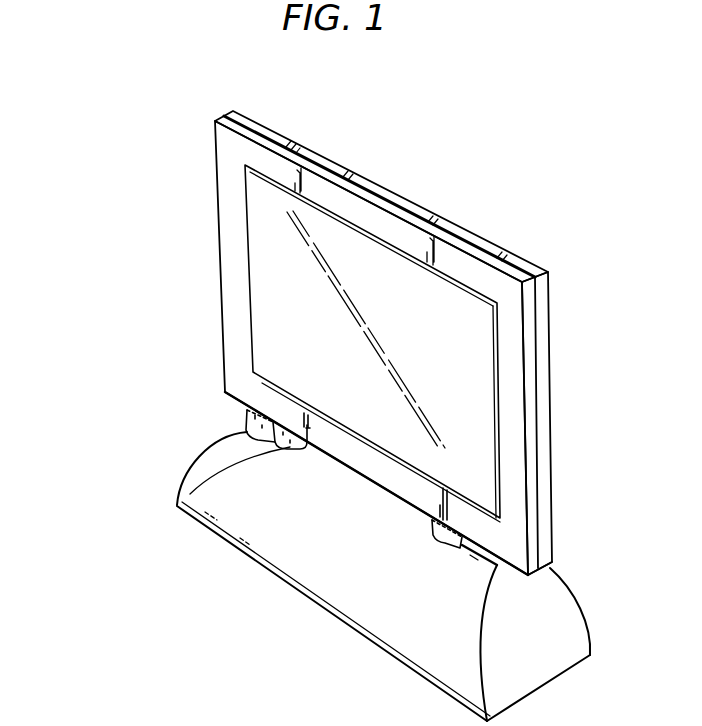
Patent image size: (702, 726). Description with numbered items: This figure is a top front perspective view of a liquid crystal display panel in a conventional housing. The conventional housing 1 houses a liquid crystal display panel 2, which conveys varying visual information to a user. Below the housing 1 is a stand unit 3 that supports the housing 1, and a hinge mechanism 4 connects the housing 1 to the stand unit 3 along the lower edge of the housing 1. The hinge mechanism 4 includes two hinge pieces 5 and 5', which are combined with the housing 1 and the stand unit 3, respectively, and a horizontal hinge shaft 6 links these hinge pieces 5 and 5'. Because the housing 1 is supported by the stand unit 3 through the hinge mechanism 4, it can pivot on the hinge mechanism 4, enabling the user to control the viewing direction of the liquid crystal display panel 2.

The housing 1 is at (213, 335).
The liquid crystal display panel 2 is at (223, 393).
The stand unit 3 is at (283, 527).
The hinge mechanism 4 is at (485, 553).
The hinge piece 5 is at (187, 455).
The hinge piece 5' is at (156, 496).
The horizontal hinge shaft 6 is at (455, 527).